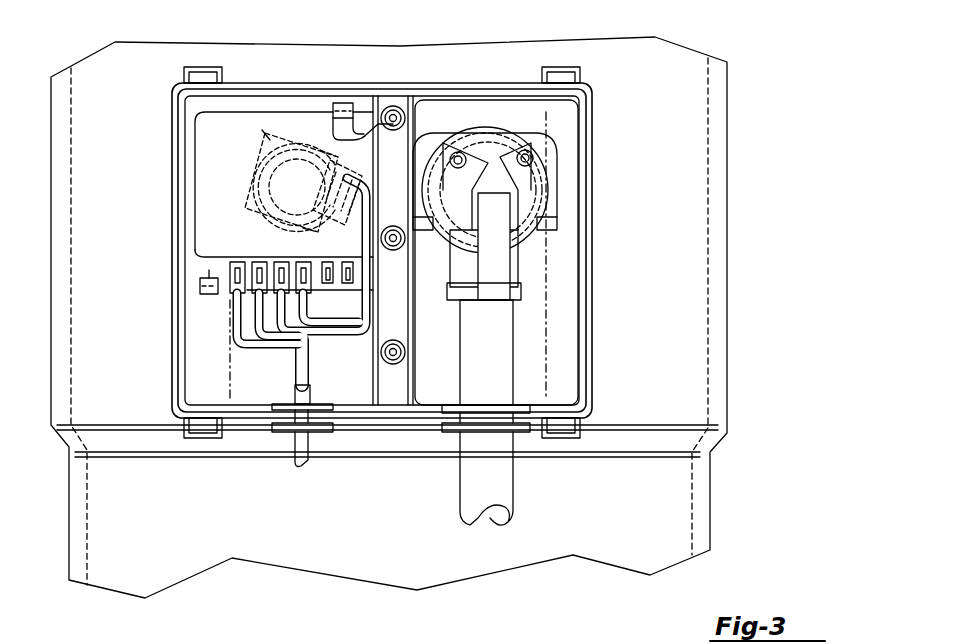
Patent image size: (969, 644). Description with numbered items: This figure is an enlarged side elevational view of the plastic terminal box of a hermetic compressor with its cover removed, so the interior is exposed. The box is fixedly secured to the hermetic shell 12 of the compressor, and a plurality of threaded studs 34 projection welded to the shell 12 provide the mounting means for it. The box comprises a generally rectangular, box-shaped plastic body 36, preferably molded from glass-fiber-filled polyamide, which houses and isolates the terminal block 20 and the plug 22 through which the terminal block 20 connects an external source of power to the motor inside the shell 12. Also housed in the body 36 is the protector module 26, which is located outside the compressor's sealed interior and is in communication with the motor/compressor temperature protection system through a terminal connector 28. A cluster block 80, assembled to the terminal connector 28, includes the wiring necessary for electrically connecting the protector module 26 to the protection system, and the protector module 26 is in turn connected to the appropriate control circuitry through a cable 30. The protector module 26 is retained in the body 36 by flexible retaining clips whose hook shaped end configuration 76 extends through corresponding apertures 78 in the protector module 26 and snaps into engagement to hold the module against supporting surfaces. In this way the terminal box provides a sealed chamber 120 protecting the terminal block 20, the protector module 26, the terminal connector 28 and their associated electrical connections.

The hermetic shell 12 is at (697, 262).
The terminal block 20 is at (490, 140).
The plug 22 is at (500, 270).
The protector module 26 is at (223, 118).
The terminal connector 28 is at (290, 180).
The cable 30 is at (298, 461).
The threaded studs 34 is at (398, 365).
The plastic body 36 is at (590, 185).
The hook shaped end configuration 76 is at (343, 102).
The apertures 78 is at (393, 112).
The cluster block 80 is at (262, 127).
The sealed chamber 120 is at (533, 373).